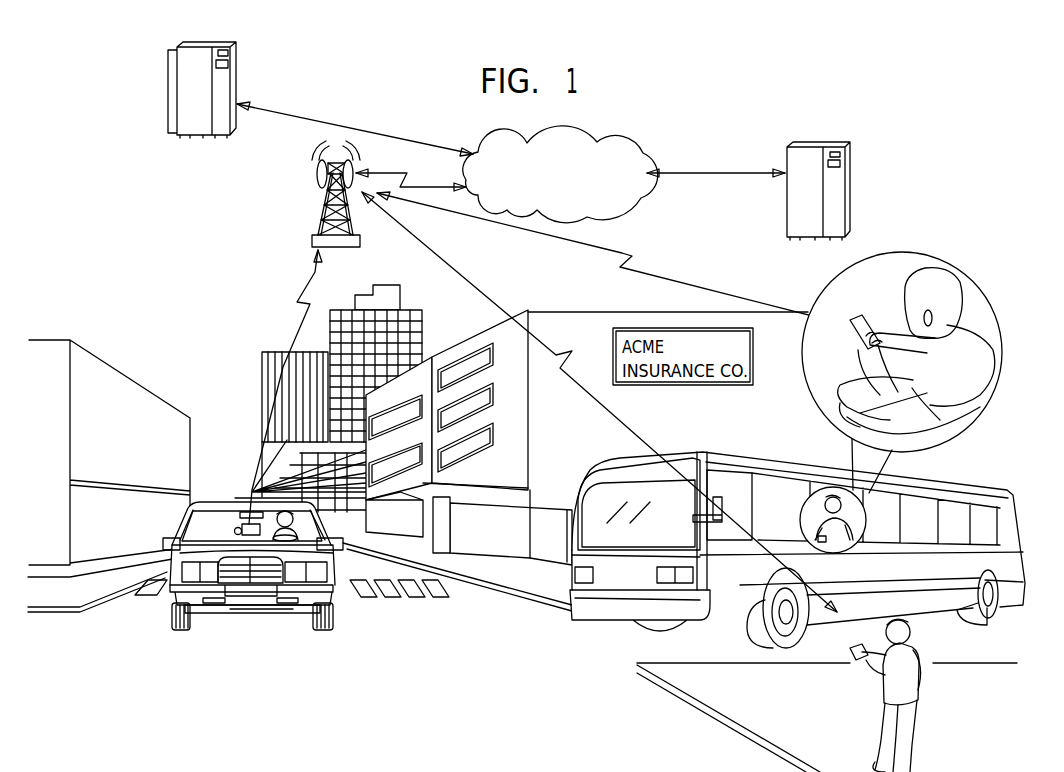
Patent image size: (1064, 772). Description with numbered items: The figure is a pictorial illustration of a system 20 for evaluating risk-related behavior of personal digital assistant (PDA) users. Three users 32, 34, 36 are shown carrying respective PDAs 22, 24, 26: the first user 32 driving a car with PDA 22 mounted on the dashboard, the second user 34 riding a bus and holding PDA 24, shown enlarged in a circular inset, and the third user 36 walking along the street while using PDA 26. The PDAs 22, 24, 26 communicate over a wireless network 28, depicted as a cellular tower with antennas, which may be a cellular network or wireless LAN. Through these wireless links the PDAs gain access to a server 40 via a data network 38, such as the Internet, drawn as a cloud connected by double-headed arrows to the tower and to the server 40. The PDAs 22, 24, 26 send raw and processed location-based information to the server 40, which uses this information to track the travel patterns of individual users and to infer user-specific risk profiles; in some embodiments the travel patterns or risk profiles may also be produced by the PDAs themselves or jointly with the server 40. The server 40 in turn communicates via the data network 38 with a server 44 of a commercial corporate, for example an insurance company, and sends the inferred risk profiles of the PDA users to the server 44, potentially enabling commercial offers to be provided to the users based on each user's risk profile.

The system 20 is at (710, 122).
The PDA 22 is at (208, 532).
The PDA 24 is at (863, 318).
The PDA 26 is at (853, 643).
The wireless network 28 is at (323, 207).
The user 32 is at (297, 537).
The user 34 is at (945, 285).
The user 36 is at (910, 653).
The data network 38 is at (633, 207).
The server 40 is at (786, 200).
The server 44 is at (197, 137).